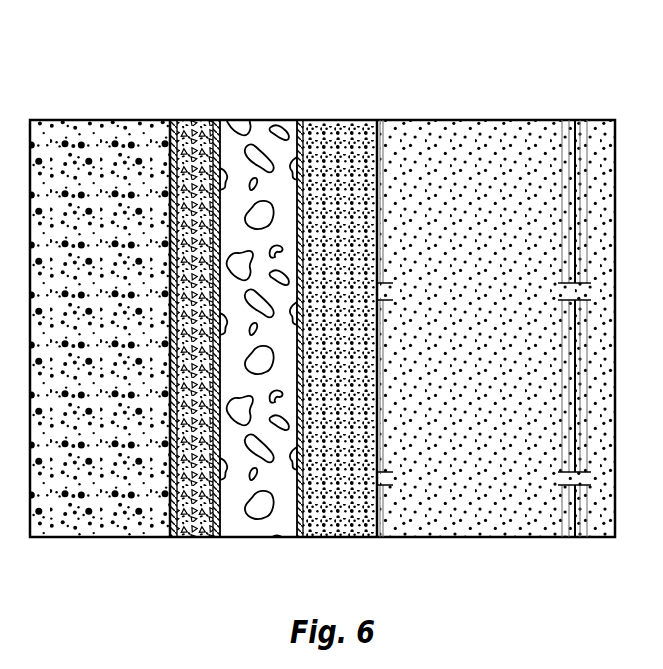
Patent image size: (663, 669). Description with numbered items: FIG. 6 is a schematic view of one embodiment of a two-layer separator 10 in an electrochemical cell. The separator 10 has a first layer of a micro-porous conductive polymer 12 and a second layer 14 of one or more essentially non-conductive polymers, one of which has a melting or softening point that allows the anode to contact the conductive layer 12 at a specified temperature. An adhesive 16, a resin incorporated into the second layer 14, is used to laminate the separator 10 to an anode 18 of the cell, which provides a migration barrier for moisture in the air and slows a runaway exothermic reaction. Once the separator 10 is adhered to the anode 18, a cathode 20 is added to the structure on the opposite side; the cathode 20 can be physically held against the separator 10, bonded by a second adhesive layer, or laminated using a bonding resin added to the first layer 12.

The separator 10 is at (465, 75).
The first layer of micro-porous conductive polymer 12 is at (338, 537).
The second layer 14 is at (262, 537).
The adhesive 16 is at (188, 537).
The anode 18 is at (92, 537).
The cathode 20 is at (523, 118).